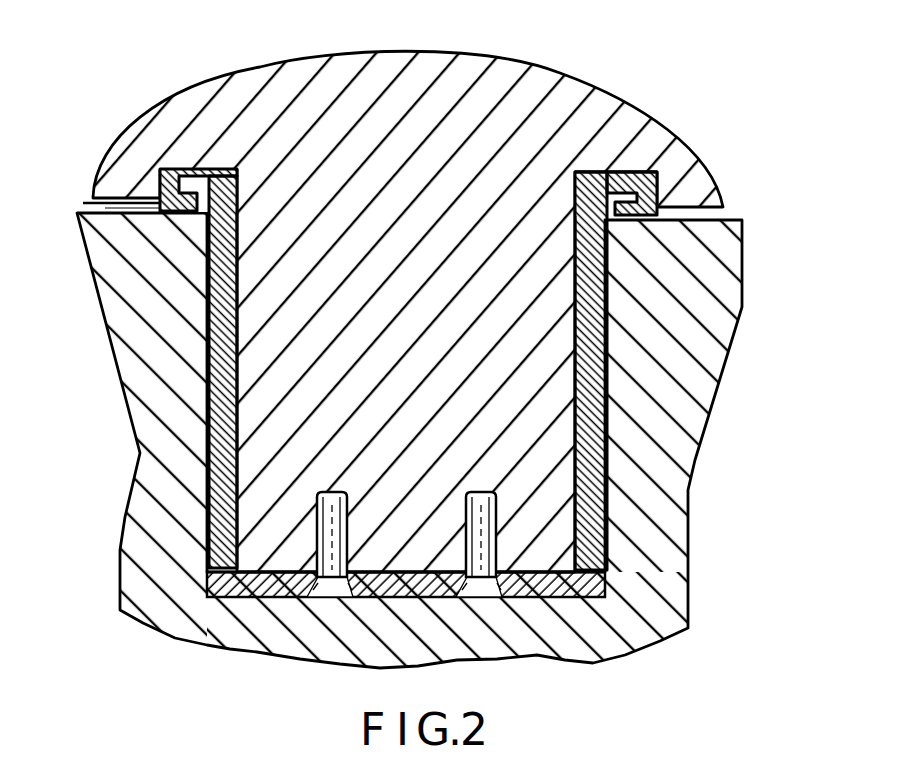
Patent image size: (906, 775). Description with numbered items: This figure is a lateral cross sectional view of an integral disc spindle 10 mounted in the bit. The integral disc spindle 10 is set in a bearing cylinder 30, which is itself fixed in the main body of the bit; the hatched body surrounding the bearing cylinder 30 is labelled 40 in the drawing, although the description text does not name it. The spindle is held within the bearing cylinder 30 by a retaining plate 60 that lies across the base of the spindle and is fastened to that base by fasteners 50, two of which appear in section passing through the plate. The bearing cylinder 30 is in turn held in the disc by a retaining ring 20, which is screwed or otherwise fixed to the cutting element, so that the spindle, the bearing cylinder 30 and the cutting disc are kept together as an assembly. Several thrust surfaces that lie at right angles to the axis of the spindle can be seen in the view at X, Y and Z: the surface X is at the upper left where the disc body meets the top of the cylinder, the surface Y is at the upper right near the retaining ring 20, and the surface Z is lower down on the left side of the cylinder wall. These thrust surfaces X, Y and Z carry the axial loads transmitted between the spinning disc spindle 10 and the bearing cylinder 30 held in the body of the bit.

The integral disc spindle 10 is at (485, 95).
The retaining ring 20 is at (672, 178).
The bearing cylinder 30 is at (601, 307).
The housing 40 is at (146, 376).
The fasteners 50 is at (504, 548).
The retaining plate 60 is at (258, 598).
The thrust surface X is at (83, 203).
The thrust surface Y is at (617, 158).
The thrust surface Z is at (192, 533).